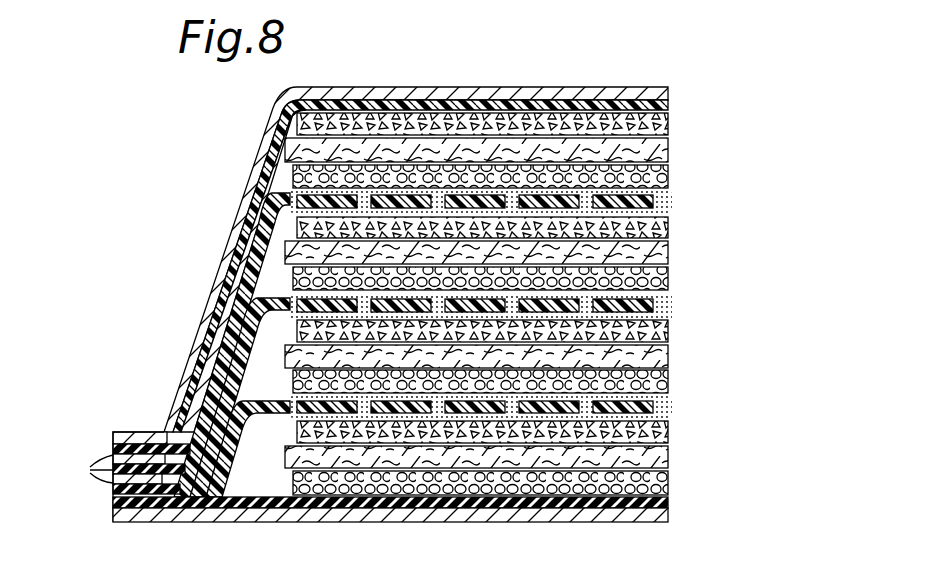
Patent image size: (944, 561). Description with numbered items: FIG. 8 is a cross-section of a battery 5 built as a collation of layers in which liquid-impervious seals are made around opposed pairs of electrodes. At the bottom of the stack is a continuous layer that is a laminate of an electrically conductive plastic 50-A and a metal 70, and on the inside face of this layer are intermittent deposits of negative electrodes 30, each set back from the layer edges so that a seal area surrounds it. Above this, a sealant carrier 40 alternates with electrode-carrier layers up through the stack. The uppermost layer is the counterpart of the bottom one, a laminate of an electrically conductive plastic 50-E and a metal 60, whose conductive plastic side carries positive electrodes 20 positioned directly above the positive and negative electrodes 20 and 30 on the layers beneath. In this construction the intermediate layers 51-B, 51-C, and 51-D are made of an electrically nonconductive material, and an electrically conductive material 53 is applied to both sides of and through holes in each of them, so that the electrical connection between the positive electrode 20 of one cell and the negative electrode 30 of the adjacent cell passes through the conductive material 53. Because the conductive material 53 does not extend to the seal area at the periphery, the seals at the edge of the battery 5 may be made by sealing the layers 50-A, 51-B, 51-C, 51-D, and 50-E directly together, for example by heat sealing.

The battery 5 is at (482, 86).
The metal 60 is at (668, 93).
The electrically conductive plastic 50-E is at (668, 107).
The positive electrode 20 is at (668, 127).
The sealant carrier 40 is at (668, 152).
The negative electrode 30 is at (668, 178).
The nonconductive layer 51-D is at (672, 204).
The nonconductive layer 51-C is at (672, 306).
The electrically conductive material 53 is at (672, 295).
The nonconductive layer 51-B is at (672, 409).
The electrically conductive plastic 50-A is at (668, 505).
The metal 70 is at (668, 520).